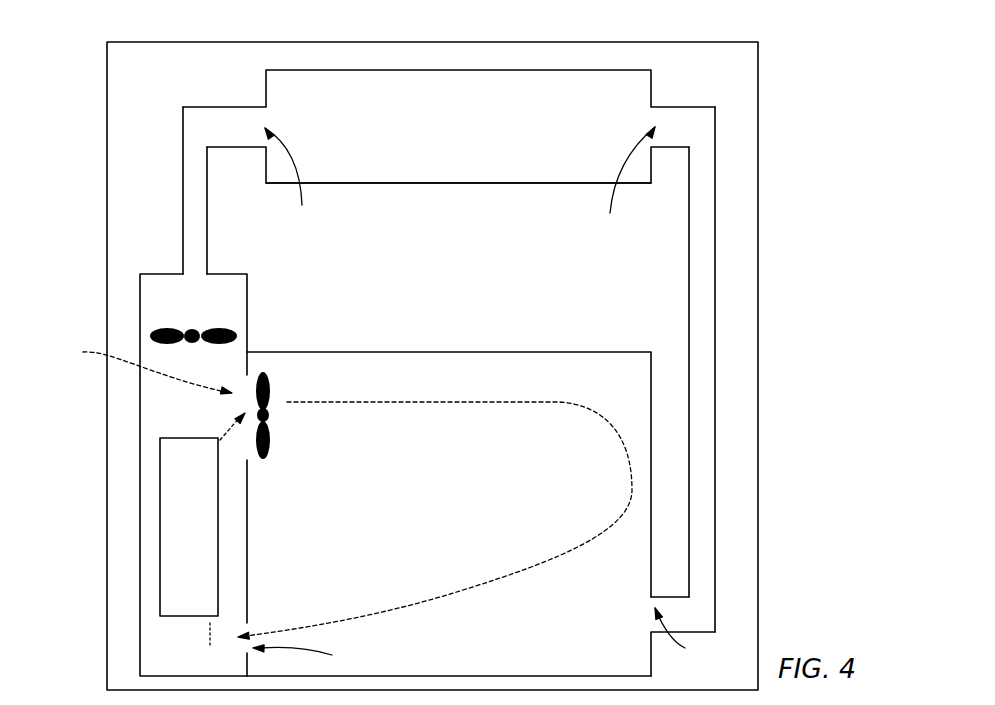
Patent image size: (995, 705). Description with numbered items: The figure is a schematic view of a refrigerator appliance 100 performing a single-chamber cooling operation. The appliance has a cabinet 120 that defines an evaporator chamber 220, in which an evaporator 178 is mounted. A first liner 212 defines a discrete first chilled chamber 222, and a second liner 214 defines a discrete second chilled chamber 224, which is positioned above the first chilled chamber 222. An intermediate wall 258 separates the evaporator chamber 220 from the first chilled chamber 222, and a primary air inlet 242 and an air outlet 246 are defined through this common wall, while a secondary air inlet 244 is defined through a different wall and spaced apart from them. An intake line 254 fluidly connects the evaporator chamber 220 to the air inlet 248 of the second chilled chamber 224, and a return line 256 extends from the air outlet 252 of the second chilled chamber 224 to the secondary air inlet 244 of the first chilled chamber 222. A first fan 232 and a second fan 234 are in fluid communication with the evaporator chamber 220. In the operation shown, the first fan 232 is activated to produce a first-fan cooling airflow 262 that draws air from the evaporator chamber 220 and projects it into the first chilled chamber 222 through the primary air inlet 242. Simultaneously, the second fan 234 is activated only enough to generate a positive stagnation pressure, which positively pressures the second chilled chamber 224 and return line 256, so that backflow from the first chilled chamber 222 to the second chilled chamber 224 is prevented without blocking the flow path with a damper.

The refrigerator appliance 100 is at (426, 345).
The cabinet 120 is at (760, 72).
The evaporator 178 is at (160, 520).
The first liner 212 is at (448, 352).
The second liner 214 is at (472, 183).
The evaporator chamber 220 is at (155, 401).
The first chilled chamber 222 is at (441, 509).
The second chilled chamber 224 is at (466, 134).
The first fan 232 is at (263, 372).
The second fan 234 is at (237, 333).
The primary air inlet 242 is at (139, 366).
The secondary air inlet 244 is at (683, 640).
The air outlet 246 is at (310, 656).
The air inlet 248 is at (292, 180).
The air outlet 252 is at (628, 188).
The intake line 254 is at (183, 208).
The return line 256 is at (713, 290).
The intermediate wall 258 is at (247, 548).
The first-fan cooling airflow 262 is at (492, 402).